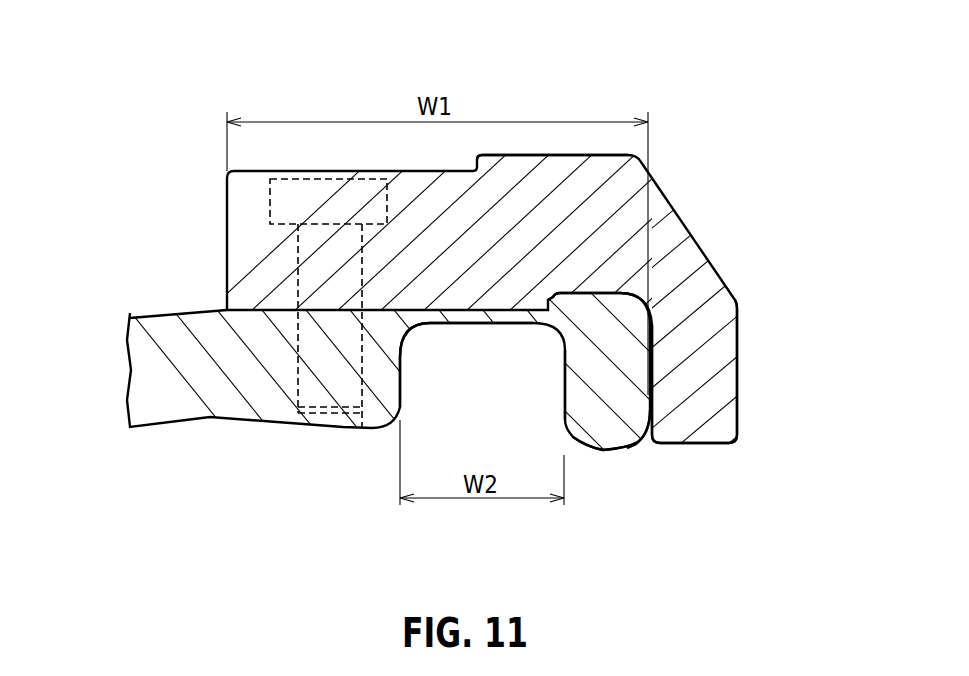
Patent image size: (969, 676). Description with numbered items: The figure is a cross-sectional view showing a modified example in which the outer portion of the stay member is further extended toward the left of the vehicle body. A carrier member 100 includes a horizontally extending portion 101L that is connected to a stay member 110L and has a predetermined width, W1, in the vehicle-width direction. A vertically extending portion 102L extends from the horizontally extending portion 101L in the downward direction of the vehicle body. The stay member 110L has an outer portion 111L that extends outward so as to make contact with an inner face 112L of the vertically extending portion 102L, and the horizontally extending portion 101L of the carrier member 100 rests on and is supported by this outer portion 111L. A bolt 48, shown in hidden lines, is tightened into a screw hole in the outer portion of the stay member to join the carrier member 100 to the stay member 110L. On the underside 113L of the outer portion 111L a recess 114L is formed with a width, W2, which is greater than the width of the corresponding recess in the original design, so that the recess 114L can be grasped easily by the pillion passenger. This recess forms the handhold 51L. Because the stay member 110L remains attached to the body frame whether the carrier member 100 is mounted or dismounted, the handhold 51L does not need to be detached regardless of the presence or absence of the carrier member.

The carrier member 100 is at (678, 205).
The horizontally extending portion 101L is at (510, 167).
The vertically extending portion 102L is at (713, 350).
The stay member 110L is at (166, 318).
The outer portion 111L is at (600, 360).
The inner face 112L is at (652, 381).
The underside 113L is at (584, 447).
The recess 114L is at (483, 320).
The handhold 51L is at (437, 407).
The bolt 48 is at (333, 172).